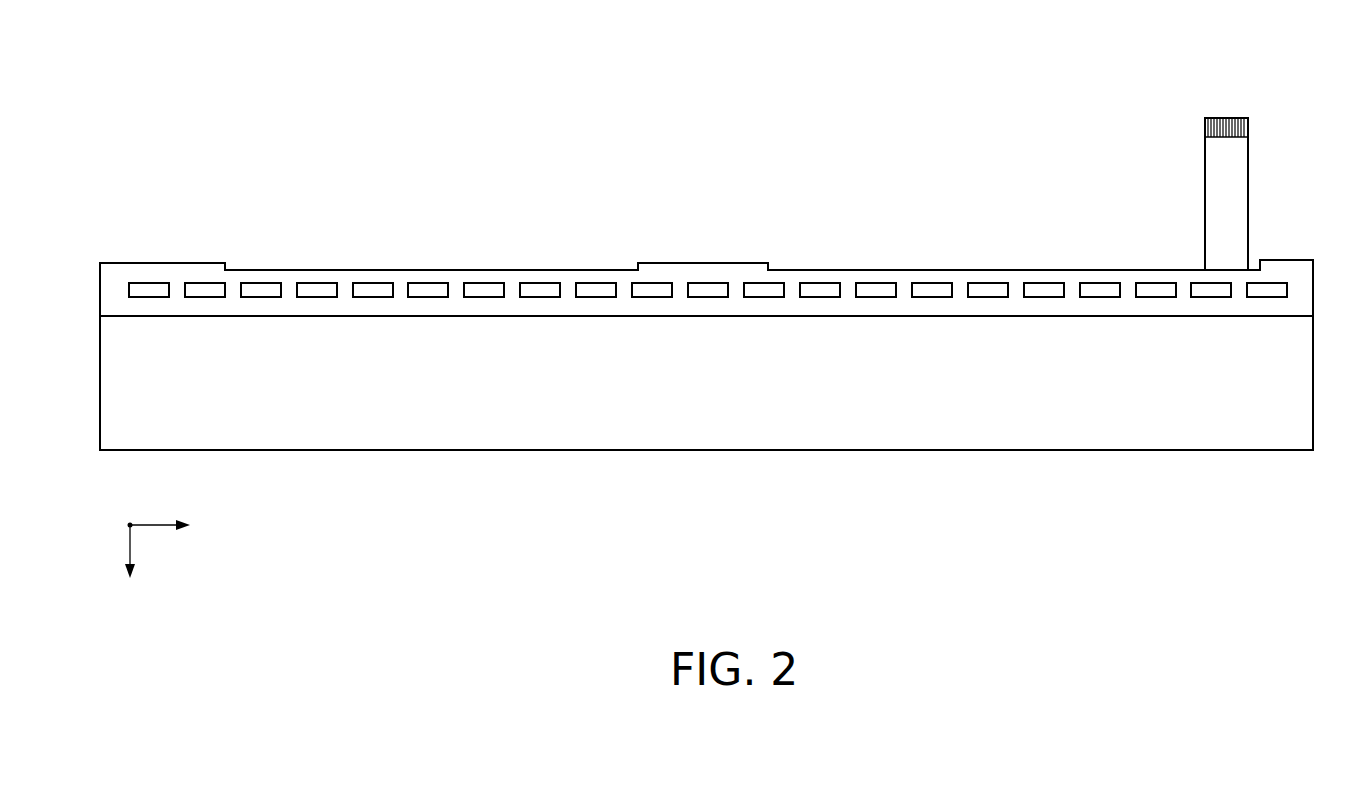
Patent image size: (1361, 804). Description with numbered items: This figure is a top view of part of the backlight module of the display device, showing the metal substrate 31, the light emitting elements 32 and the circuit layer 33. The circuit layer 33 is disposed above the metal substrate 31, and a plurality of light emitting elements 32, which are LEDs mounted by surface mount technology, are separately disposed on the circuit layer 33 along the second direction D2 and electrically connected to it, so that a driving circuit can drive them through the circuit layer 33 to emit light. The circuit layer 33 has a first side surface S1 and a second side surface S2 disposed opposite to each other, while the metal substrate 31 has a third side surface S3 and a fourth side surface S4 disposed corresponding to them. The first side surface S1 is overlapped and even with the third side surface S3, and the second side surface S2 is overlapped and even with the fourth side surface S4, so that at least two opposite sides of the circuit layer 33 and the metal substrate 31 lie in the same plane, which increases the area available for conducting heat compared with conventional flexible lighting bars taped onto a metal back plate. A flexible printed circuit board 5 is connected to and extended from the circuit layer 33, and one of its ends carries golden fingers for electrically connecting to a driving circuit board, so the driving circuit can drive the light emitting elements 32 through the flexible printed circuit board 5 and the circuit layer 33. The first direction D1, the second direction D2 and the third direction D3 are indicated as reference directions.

The metal substrate 31 is at (1007, 432).
The light emitting element 32 is at (1094, 288).
The circuit layer 33 is at (193, 276).
The flexible printed circuit board 5 is at (1238, 208).
The first side surface S1 is at (100, 293).
The second side surface S2 is at (1313, 290).
The third side surface S3 is at (100, 403).
The fourth side surface S4 is at (1313, 402).
The first direction D1 is at (131, 568).
The second direction D2 is at (178, 525).
The third direction D3 is at (113, 523).